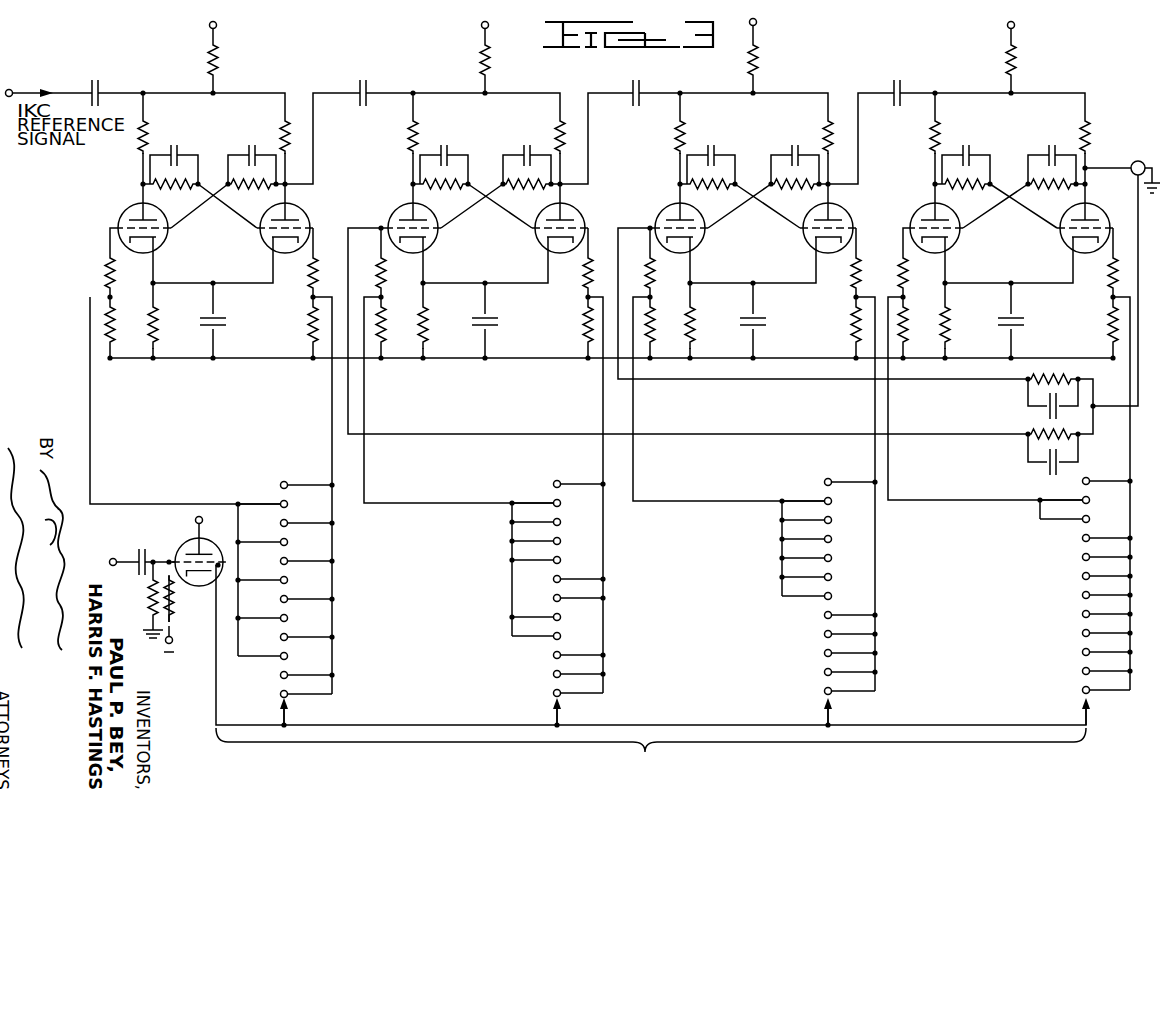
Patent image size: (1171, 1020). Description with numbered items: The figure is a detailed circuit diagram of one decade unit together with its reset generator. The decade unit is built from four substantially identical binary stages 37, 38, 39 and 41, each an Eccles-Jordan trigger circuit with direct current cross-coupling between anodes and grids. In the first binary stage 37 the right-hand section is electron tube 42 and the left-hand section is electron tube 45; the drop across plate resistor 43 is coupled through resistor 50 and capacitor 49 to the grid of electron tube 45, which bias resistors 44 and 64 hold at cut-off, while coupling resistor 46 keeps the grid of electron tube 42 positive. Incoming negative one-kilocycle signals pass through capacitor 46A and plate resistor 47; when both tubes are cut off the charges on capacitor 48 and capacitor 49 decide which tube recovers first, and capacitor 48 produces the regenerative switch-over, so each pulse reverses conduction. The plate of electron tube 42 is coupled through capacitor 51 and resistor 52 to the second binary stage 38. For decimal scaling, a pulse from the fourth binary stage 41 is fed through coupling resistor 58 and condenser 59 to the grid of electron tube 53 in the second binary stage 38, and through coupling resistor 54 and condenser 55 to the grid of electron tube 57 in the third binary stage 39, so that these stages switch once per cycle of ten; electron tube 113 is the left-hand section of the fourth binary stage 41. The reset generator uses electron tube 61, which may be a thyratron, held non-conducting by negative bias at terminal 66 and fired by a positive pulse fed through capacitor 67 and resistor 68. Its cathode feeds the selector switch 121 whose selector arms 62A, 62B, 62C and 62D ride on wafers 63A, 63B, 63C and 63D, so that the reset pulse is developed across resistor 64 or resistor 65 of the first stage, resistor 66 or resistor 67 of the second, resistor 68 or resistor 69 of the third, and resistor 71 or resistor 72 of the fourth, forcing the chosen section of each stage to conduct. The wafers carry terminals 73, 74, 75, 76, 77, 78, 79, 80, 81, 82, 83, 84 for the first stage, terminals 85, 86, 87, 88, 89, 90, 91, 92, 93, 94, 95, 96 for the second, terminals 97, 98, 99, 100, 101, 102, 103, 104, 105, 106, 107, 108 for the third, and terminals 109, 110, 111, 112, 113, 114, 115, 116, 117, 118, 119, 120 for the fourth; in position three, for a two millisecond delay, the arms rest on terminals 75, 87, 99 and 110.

The first binary stage 37 is at (213, 188).
The second binary stage 38 is at (623, 354).
The third binary stage 39 is at (629, 352).
The fourth binary stage 41 is at (1012, 353).
The electron tube 42 is at (300, 210).
The plate resistor 43 is at (287, 130).
The bias resistor 44 is at (113, 278).
The electron tube 45 is at (126, 210).
The coupling resistor 46 is at (170, 192).
The capacitor 46A is at (95, 80).
The plate resistor 47 is at (145, 130).
The capacitor 48 is at (175, 143).
The capacitor 49 is at (253, 143).
The resistor 50 is at (258, 192).
The capacitor 51 is at (366, 79).
The resistor 52 is at (415, 130).
The electron tube 53 is at (401, 212).
The coupling resistor 54 is at (1040, 378).
The condenser 55 is at (1057, 406).
The electron tube 57 is at (668, 210).
The coupling resistor 58 is at (1040, 433).
The condenser 59 is at (1057, 462).
The electron tube 61 is at (182, 546).
The selector arm 62A is at (307, 711).
The selector arm 62B is at (580, 711).
The selector arm 62C is at (851, 711).
The selector arm 62D is at (1110, 711).
The wafer 63A is at (234, 500).
The wafer 63B is at (582, 588).
The wafer 63C is at (851, 586).
The wafer 63D is at (1103, 585).
The resistor 64 is at (113, 330).
The resistor 65 is at (312, 330).
The terminal 66 is at (384, 330).
The capacitor 67 is at (586, 330).
The resistor 68 is at (652, 330).
The resistor 69 is at (855, 328).
The resistor 71 is at (906, 328).
The resistor 72 is at (1112, 328).
The terminal 73 is at (294, 694).
The terminal 74 is at (294, 675).
The terminal 75 is at (275, 656).
The terminal 76 is at (294, 637).
The terminal 77 is at (275, 618).
The terminal 78 is at (294, 599).
The terminal 79 is at (275, 580).
The terminal 80 is at (294, 561).
The terminal 81 is at (275, 542).
The terminal 82 is at (294, 523).
The terminal 83 is at (275, 504).
The terminal 84 is at (294, 485).
The terminal 85 is at (566, 693).
The terminal 86 is at (566, 674).
The terminal 87 is at (566, 655).
The terminal 88 is at (548, 636).
The terminal 89 is at (548, 617).
The terminal 90 is at (566, 598).
The terminal 91 is at (566, 579).
The terminal 92 is at (548, 560).
The terminal 93 is at (548, 541).
The terminal 94 is at (548, 522).
The terminal 95 is at (548, 503).
The terminal 96 is at (566, 484).
The terminal 97 is at (837, 691).
The terminal 98 is at (837, 672).
The terminal 99 is at (837, 653).
The terminal 100 is at (832, 634).
The terminal 101 is at (832, 615).
The terminal 102 is at (824, 596).
The terminal 103 is at (824, 577).
The terminal 104 is at (824, 558).
The terminal 105 is at (824, 539).
The terminal 106 is at (824, 520).
The terminal 107 is at (824, 501).
The terminal 108 is at (832, 482).
The terminal 109 is at (1089, 690).
The terminal 110 is at (1089, 671).
The terminal 111 is at (575, 209).
The terminal 112 is at (843, 209).
The electron tube 113 is at (922, 208).
The terminal 114 is at (1098, 209).
The terminal 115 is at (1089, 576).
The terminal 116 is at (1089, 557).
The terminal 117 is at (1089, 538).
The terminal 118 is at (1082, 519).
The terminal 119 is at (1082, 500).
The terminal 120 is at (1089, 481).
The selector switch 121 is at (651, 668).